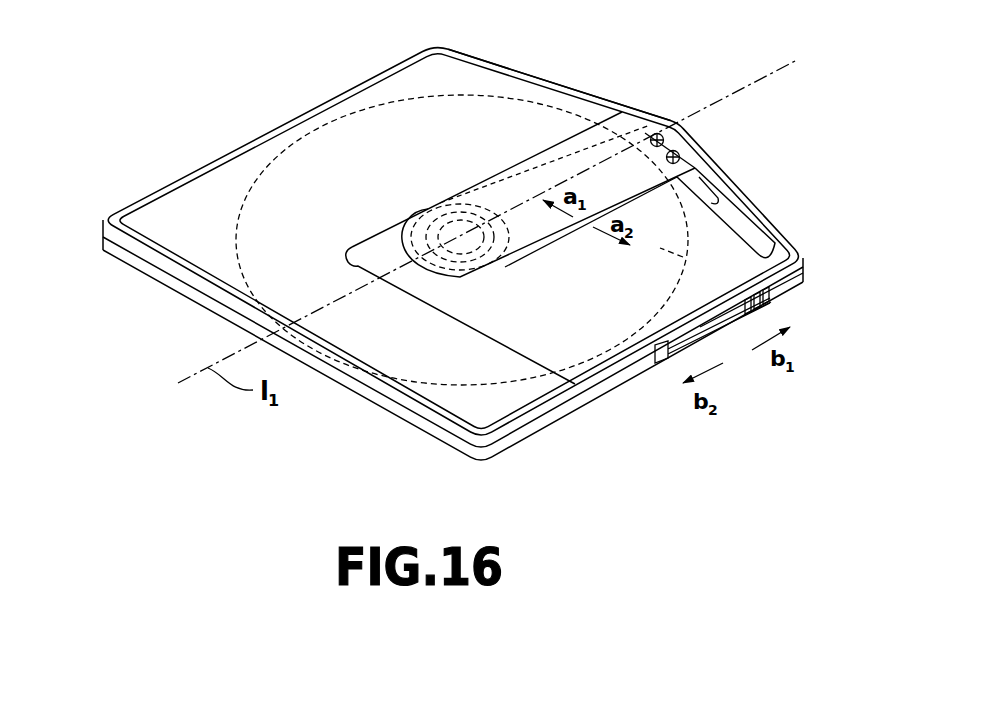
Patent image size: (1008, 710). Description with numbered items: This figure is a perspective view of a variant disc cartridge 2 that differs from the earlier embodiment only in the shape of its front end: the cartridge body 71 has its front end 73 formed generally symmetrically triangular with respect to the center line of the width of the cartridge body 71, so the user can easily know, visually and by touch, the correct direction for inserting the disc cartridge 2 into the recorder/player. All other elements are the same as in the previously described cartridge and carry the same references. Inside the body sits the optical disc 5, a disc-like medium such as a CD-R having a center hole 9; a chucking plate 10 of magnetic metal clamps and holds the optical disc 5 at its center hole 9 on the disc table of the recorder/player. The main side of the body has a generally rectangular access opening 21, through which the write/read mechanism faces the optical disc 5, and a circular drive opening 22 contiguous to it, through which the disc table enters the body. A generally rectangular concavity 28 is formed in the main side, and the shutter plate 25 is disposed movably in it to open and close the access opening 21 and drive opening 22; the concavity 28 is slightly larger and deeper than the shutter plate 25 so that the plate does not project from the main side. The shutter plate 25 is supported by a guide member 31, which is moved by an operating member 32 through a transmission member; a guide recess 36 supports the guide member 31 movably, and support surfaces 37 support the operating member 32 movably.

The disc cartridge 2 is at (243, 432).
The optical disc 5 is at (303, 180).
The center hole 9 is at (446, 222).
The chucking plate 10 is at (447, 225).
The access opening 21 is at (683, 257).
The drive opening 22 is at (512, 258).
The shutter plate 25 is at (522, 187).
The concavity 28 is at (350, 247).
The guide member 31 is at (587, 125).
The operating member 32 is at (770, 307).
The guide recess 36 is at (740, 207).
The support surfaces 37 is at (665, 366).
The cartridge body 71 is at (154, 230).
The front end 73 is at (590, 93).